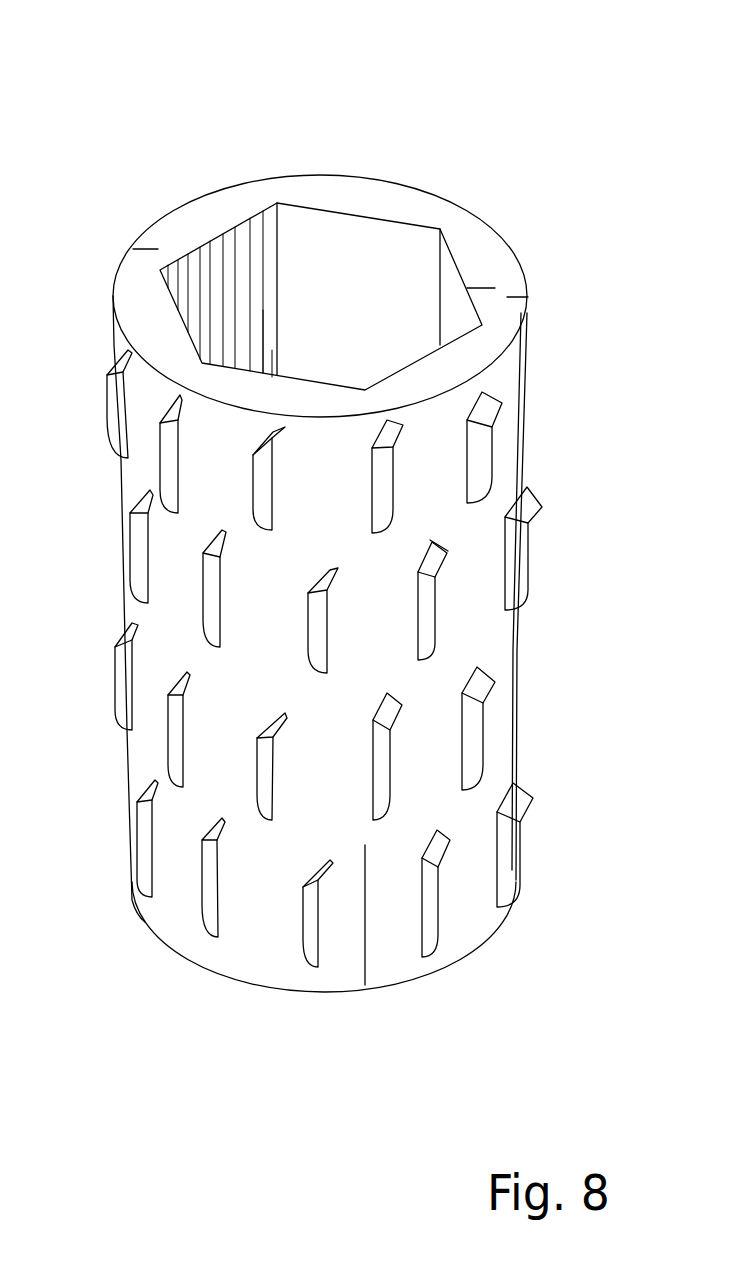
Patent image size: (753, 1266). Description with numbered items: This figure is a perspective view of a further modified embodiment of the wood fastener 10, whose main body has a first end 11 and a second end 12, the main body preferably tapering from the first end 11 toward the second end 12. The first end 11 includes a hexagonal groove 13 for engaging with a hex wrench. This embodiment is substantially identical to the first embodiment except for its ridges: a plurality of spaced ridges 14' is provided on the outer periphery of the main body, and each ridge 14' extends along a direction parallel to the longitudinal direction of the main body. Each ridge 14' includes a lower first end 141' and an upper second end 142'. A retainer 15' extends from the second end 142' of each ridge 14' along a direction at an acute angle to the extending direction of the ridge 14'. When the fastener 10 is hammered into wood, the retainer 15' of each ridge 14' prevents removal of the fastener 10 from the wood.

The fastener 10 is at (110, 207).
The first end 11 is at (493, 267).
The second end 12 is at (372, 957).
The hexagonal groove 13 is at (337, 262).
The ridge 14' is at (559, 630).
The first end 141' is at (531, 646).
The second end 142' is at (548, 582).
The retainer 15' is at (554, 558).